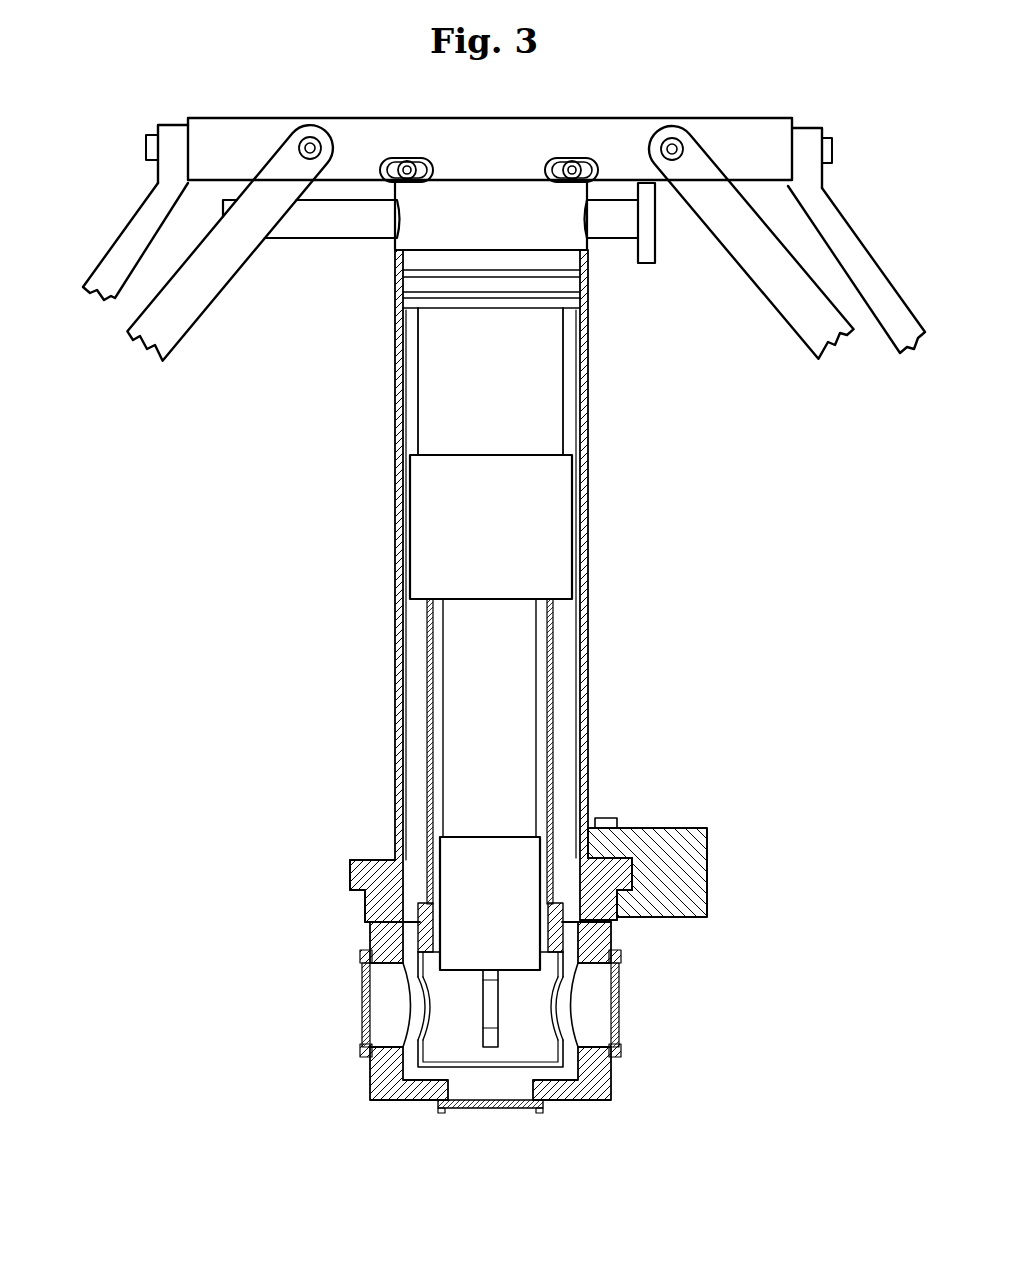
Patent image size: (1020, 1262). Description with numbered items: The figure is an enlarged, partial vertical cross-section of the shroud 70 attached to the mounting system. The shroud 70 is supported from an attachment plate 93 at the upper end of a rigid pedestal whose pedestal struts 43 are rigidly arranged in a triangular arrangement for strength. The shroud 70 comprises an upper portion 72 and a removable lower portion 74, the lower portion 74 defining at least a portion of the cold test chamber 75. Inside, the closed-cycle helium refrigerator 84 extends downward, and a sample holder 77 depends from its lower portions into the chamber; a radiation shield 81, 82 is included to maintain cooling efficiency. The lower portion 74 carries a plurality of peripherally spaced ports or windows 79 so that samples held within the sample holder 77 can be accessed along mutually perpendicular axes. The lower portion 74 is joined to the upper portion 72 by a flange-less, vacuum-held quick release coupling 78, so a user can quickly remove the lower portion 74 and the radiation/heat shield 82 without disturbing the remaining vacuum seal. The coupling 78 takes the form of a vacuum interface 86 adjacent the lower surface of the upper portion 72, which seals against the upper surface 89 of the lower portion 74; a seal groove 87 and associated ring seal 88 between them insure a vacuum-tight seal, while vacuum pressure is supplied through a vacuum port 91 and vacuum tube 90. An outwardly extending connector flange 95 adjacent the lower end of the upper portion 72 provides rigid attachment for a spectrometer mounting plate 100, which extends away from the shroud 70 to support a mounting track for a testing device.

The attachment plate 93 is at (733, 128).
The pedestal struts 43 is at (182, 290).
The vacuum port 91 is at (338, 230).
The shroud 70 is at (491, 667).
The upper portion 72 is at (595, 620).
The closed-cycle helium refrigerator 84 is at (535, 398).
The vacuum tube 90 is at (585, 563).
The radiation shield 81 is at (550, 690).
The vacuum interface 86 is at (398, 914).
The upper surface 89 is at (490, 903).
The seal groove 87 is at (395, 919).
The spectrometer mounting plate 100 is at (692, 832).
The connector flange 95 is at (365, 862).
The ring seal 88 is at (620, 929).
The quick release coupling 78 is at (607, 954).
The ports or windows 79 is at (362, 1002).
The radiation/heat shield 82 is at (563, 1047).
The cold test chamber 75 is at (532, 1045).
The lower portion 74 is at (382, 1082).
The sample holder 77 is at (487, 1037).